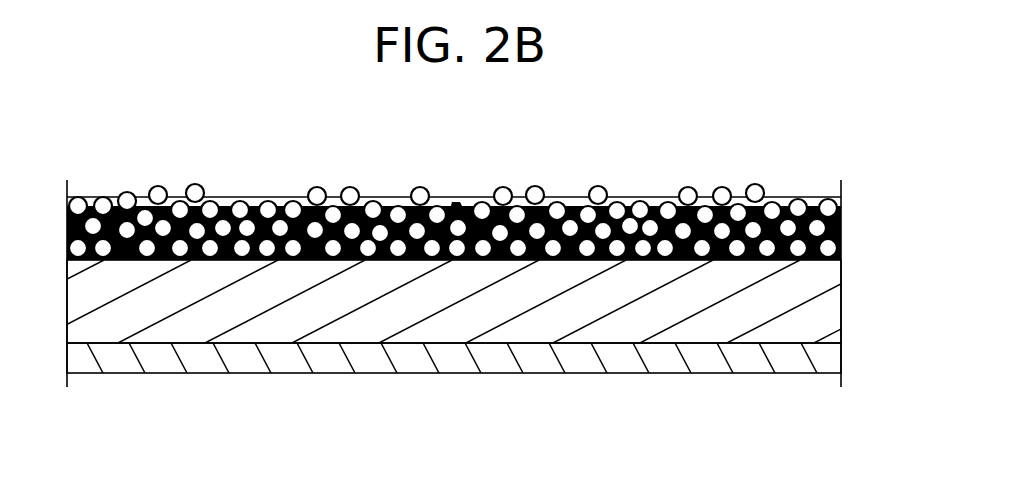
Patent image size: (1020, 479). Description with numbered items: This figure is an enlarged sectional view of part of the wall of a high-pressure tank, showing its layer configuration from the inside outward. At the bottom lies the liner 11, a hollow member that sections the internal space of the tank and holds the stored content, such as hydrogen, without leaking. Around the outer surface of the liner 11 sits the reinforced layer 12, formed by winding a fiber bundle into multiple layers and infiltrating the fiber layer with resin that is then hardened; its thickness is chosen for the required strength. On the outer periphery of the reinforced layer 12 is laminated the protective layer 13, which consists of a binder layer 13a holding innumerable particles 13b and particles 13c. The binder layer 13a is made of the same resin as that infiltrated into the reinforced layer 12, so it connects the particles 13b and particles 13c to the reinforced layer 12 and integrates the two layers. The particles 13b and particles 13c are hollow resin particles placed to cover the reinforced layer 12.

The liner 11 is at (582, 360).
The reinforced layer 12 is at (852, 302).
The protective layer 13 is at (454, 183).
The binder layer 13a is at (388, 197).
The particles 13b is at (504, 200).
The particles 13c is at (456, 205).